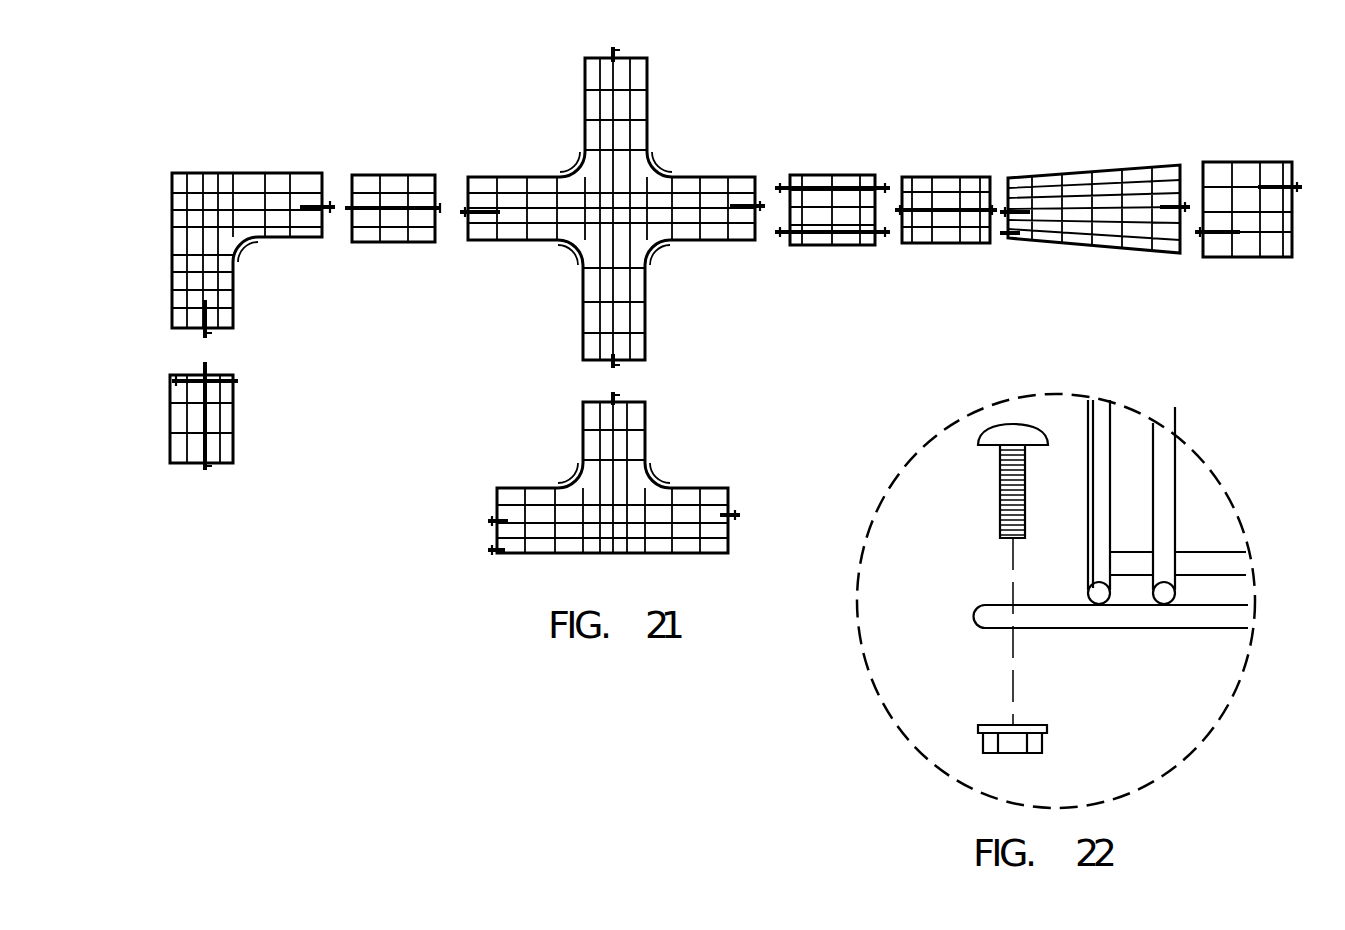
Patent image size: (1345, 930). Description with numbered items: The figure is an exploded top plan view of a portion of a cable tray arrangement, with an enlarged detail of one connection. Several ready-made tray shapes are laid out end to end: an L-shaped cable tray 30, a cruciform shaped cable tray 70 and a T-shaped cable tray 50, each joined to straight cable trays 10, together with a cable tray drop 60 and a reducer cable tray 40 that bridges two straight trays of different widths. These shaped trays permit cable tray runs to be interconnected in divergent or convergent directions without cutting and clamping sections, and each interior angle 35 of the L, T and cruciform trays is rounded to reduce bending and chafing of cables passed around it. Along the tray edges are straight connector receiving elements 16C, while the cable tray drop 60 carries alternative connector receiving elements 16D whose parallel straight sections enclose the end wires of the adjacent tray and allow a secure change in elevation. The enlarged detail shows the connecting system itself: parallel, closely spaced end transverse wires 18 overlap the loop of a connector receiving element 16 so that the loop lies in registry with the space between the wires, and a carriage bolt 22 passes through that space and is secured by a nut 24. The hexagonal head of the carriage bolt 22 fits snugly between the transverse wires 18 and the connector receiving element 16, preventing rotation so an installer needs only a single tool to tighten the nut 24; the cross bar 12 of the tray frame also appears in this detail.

In FIG. 21, the cable tray 10 is at (283, 407).
In FIG. 21, the L-shaped cable tray 30 is at (212, 153).
In FIG. 21, the cruciform shaped cable tray 70 is at (672, 90).
In FIG. 21, the T-shaped cable tray 50 is at (522, 568).
In FIG. 21, the cable tray drop 60 is at (835, 262).
In FIG. 21, the reducer cable tray 40 is at (1105, 257).
In FIG. 21, the interior angle 35 is at (247, 246).
In FIG. 21, the carriage bolt 22 is at (340, 202).
In FIG. 22, the carriage bolt 22 is at (1000, 493).
In FIG. 21, the nut 24 is at (326, 170).
In FIG. 22, the nut 24 is at (978, 727).
In FIG. 21, the straight connector receiving element 16C is at (318, 175).
In FIG. 21, the connector receiving element 16D is at (880, 186).
In FIG. 22, the end transverse wires 18 is at (1167, 478).
In FIG. 22, the cross bar 12 is at (1215, 550).
In FIG. 22, the connector receiving element 16 is at (1065, 608).